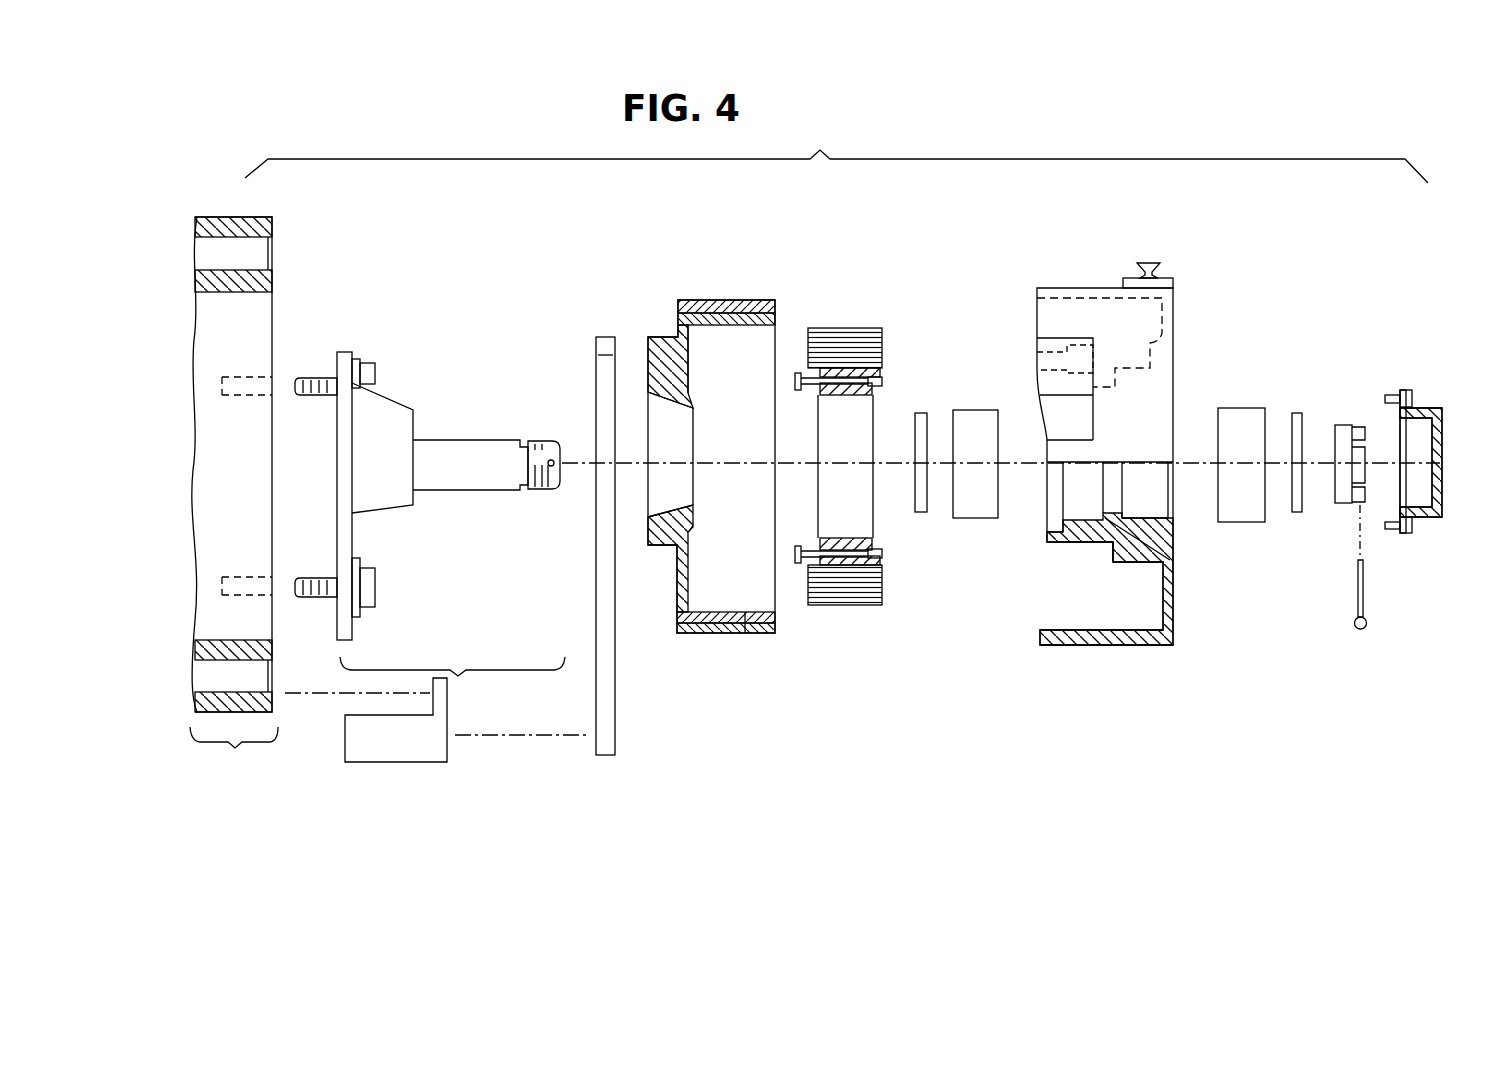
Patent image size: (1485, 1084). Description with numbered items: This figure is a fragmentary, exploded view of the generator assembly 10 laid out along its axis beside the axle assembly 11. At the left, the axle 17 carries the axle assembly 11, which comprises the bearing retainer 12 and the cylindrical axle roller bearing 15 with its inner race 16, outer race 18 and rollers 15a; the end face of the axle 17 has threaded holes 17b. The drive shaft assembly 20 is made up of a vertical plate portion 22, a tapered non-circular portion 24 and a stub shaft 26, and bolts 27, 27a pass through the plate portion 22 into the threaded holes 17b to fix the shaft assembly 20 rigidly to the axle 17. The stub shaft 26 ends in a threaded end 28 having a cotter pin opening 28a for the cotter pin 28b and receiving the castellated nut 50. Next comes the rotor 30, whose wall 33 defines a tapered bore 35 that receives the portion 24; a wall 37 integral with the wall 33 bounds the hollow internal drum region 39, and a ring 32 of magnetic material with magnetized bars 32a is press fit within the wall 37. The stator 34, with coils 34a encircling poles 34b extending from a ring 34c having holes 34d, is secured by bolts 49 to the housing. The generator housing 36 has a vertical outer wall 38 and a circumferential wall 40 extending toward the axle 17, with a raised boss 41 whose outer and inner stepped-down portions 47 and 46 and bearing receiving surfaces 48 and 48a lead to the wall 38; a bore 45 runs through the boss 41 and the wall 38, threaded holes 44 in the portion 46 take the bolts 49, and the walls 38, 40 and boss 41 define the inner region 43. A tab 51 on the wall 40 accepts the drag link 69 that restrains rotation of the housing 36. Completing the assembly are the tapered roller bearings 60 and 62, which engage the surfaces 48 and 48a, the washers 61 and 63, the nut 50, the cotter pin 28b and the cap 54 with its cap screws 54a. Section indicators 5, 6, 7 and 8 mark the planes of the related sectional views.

The generator assembly 10 is at (920, 158).
The axle assembly 11 is at (234, 752).
The bearing retainer 12 is at (373, 762).
The axle roller bearing 15 is at (271, 444).
The rollers 15a is at (270, 257).
The inner race 16 is at (270, 283).
The axle 17 is at (193, 535).
The threaded holes 17b is at (218, 380).
The outer race 18 is at (272, 228).
The drive shaft assembly 20 is at (458, 678).
The vertical plate portion 22 is at (355, 628).
The tapered non-circular portion 24 is at (385, 512).
The stub shaft 26 is at (443, 490).
The bolt 27 is at (376, 587).
The bolt 27a is at (372, 363).
The threaded end 28 is at (543, 489).
The cotter pin opening 28a is at (553, 460).
The cotter pin 28b is at (1357, 595).
The rotor 30 is at (714, 474).
The ring of magnetic material 32 is at (698, 623).
The magnetized bars 32a is at (745, 624).
The wall 33 is at (678, 368).
The stator 34 is at (866, 479).
The coils 34a is at (840, 337).
The poles 34b is at (873, 372).
The ring of magnetic material 34c is at (838, 394).
The holes 34d is at (870, 390).
The tapered bore 35 is at (680, 435).
The generator housing 36 is at (1105, 483).
The wall 37 is at (727, 300).
The vertical outer wall 38 is at (1170, 612).
The internal drum region 39 is at (760, 435).
The circumferential wall 40 is at (1087, 645).
The raised boss 41 is at (1092, 545).
The inner region 43 is at (1035, 602).
The threaded holes 44 is at (1113, 558).
The bore 45 is at (1157, 497).
The inner stepped-down portion 46 is at (1147, 555).
The outer stepped-down portion 47 is at (1063, 545).
The bearing receiving surface 48 is at (1080, 518).
The bearing receiving surface 48a is at (1138, 515).
The bolts 49 is at (795, 372).
The castellated nut 50 is at (1345, 425).
The tab 51 is at (1157, 333).
The cap 54 is at (1445, 463).
The cap screws 54a is at (1413, 402).
The tapered roller bearing 60 is at (968, 518).
The washer 61 is at (917, 448).
The tapered roller bearing 62 is at (1243, 522).
The washer 63 is at (1297, 512).
The drag link 69 is at (615, 730).
The section line 5- 5 is at (1023, 250).
The section line 6- 6 is at (633, 275).
The section line 7- 7 is at (565, 333).
The section line 8- 8 is at (900, 275).